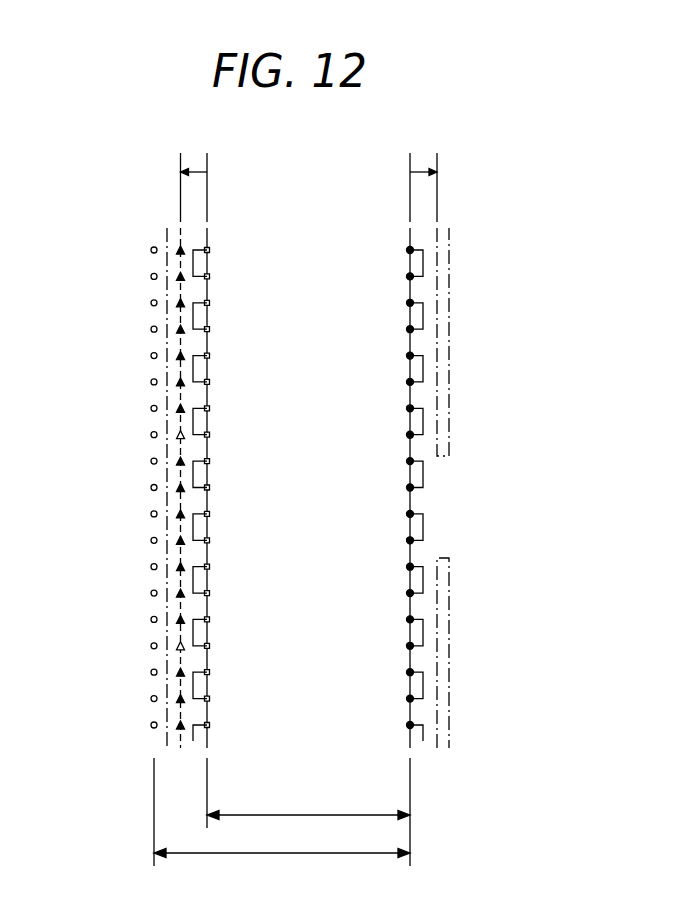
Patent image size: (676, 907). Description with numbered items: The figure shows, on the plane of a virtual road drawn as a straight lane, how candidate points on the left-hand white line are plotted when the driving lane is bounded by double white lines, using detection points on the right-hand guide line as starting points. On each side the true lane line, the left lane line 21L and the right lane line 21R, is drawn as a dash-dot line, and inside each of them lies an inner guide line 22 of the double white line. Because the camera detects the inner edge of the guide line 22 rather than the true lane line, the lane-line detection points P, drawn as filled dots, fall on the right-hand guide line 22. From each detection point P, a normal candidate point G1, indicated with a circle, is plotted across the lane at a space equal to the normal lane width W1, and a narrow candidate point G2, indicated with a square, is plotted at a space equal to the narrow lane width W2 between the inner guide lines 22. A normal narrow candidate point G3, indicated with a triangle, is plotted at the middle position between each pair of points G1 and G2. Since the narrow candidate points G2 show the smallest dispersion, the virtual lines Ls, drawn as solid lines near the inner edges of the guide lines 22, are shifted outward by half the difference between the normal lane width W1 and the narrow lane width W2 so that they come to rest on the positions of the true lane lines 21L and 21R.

The normal candidate point G1 is at (150, 330).
The left lane line 21L is at (166, 365).
The normal narrow candidate point G3 is at (180, 514).
The virtual line Ls is at (208, 389).
The narrow candidate point G2 is at (210, 460).
The inner guide line 22 is at (200, 580).
The lane-line detection point P is at (409, 303).
The right lane line 21R is at (449, 366).
The normal lane width W1 is at (282, 812).
The narrow lane width W2 is at (308, 793).